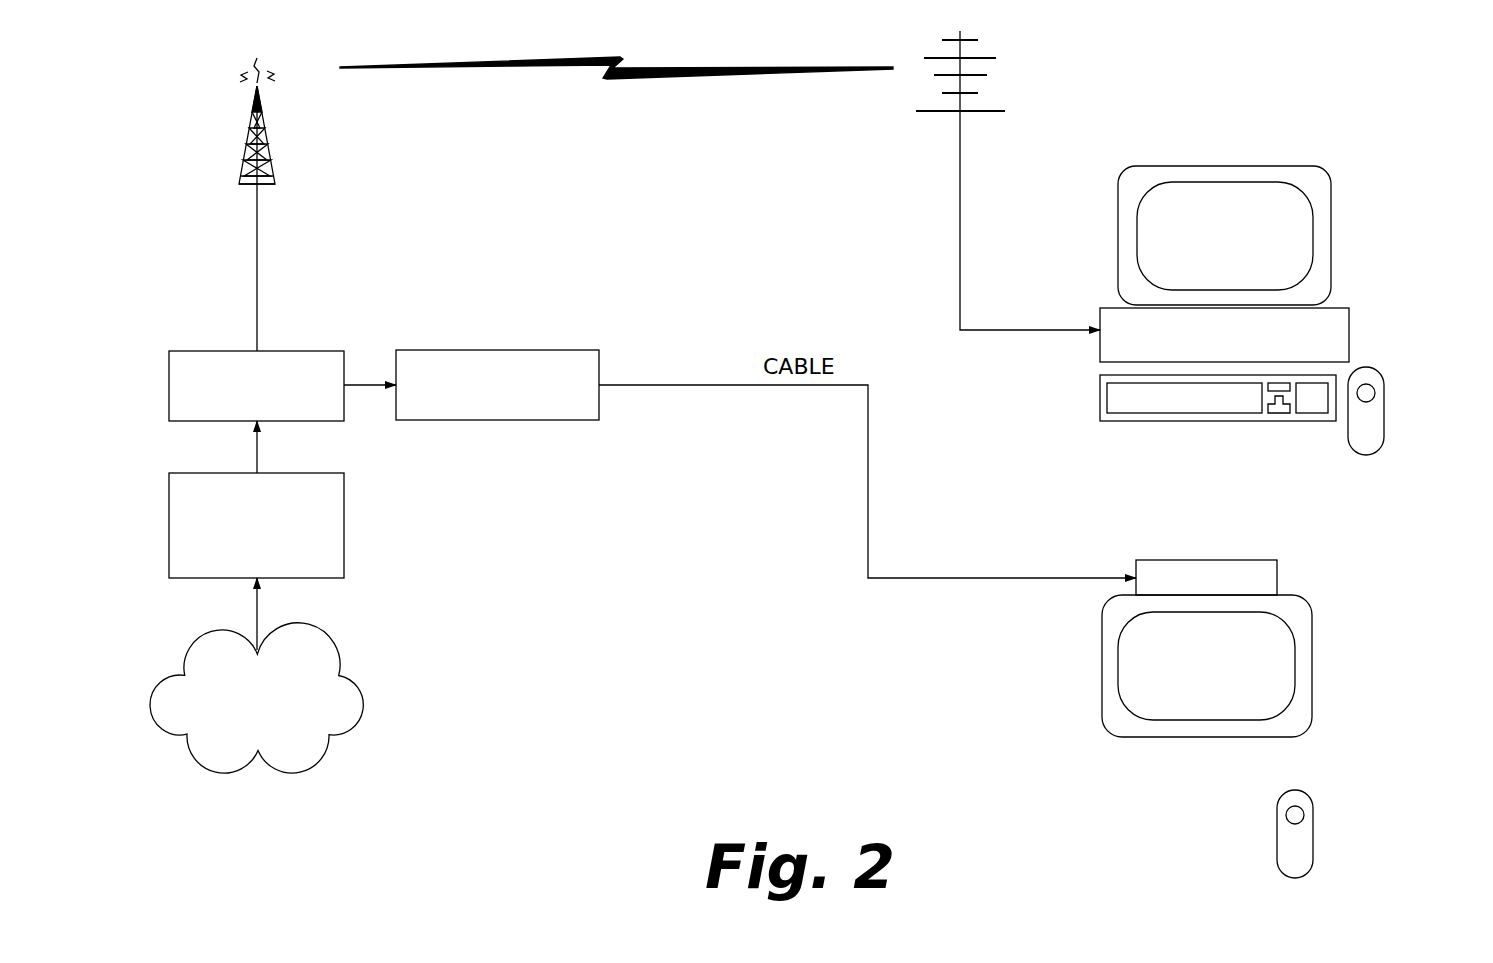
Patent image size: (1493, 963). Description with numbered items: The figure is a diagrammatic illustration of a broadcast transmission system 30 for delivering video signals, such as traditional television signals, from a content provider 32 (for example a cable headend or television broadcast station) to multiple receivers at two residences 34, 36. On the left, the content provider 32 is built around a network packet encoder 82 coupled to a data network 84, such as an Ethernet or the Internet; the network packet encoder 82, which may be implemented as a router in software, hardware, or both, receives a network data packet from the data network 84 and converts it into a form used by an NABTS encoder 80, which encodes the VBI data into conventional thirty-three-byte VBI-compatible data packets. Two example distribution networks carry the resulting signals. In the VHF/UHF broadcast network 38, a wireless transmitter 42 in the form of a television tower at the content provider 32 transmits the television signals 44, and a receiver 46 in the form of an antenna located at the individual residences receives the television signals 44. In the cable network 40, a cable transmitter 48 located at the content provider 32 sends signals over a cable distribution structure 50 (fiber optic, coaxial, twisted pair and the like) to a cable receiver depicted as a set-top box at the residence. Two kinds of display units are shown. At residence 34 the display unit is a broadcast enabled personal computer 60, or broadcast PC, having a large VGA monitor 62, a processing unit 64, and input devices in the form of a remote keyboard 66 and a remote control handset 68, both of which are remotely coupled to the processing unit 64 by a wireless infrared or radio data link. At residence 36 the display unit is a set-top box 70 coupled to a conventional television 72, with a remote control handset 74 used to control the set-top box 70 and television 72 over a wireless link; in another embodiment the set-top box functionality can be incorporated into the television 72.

The broadcast transmission system 30 is at (642, 755).
The content provider 32 is at (452, 535).
The receiver (residence with broadcast PC) 34 is at (1383, 137).
The receiver (residence with set-top box and television) 36 is at (1348, 602).
The VHF/UHF broadcast network 38 is at (630, 120).
The cable network 40 is at (908, 470).
The wireless transmitter 42 is at (275, 155).
The television signals 44 is at (620, 55).
The receiver (antenna) 46 is at (973, 108).
The cable transmitter 48 is at (573, 364).
The cable distribution structure 50 is at (890, 575).
The broadcast enabled personal computer 60 is at (1274, 219).
The VGA monitor 62 is at (1207, 208).
The processing unit 64 is at (1330, 331).
The remote keyboard 66 is at (1225, 402).
The remote control handset 68 is at (1365, 418).
The set-top box 70 is at (1240, 570).
The television 72 is at (1313, 675).
The remote control handset 74 is at (1295, 841).
The NABTS encoder 80 is at (326, 367).
The network packet encoder 82 is at (318, 526).
The data network 84 is at (343, 692).